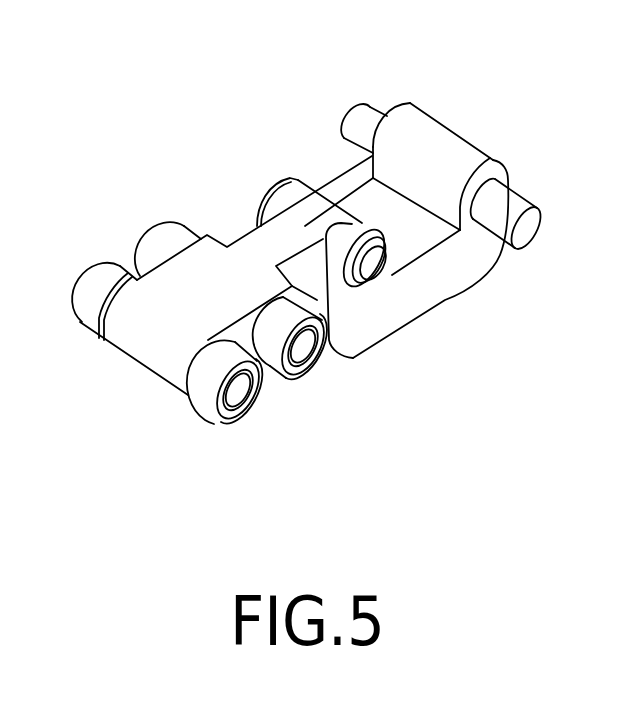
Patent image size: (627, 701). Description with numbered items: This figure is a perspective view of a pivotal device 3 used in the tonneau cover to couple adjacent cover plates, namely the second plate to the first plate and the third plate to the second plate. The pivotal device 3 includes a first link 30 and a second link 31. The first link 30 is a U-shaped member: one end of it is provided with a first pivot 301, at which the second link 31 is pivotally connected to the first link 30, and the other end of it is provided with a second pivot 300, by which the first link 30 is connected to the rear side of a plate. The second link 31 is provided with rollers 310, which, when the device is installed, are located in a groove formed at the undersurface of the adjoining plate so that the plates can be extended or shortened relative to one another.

The pivotal device 3 is at (239, 130).
The first link 30 is at (443, 300).
The second pivot 300 is at (530, 235).
The first pivot 301 is at (375, 282).
The second link 31 is at (140, 353).
The rollers 310 is at (92, 283).